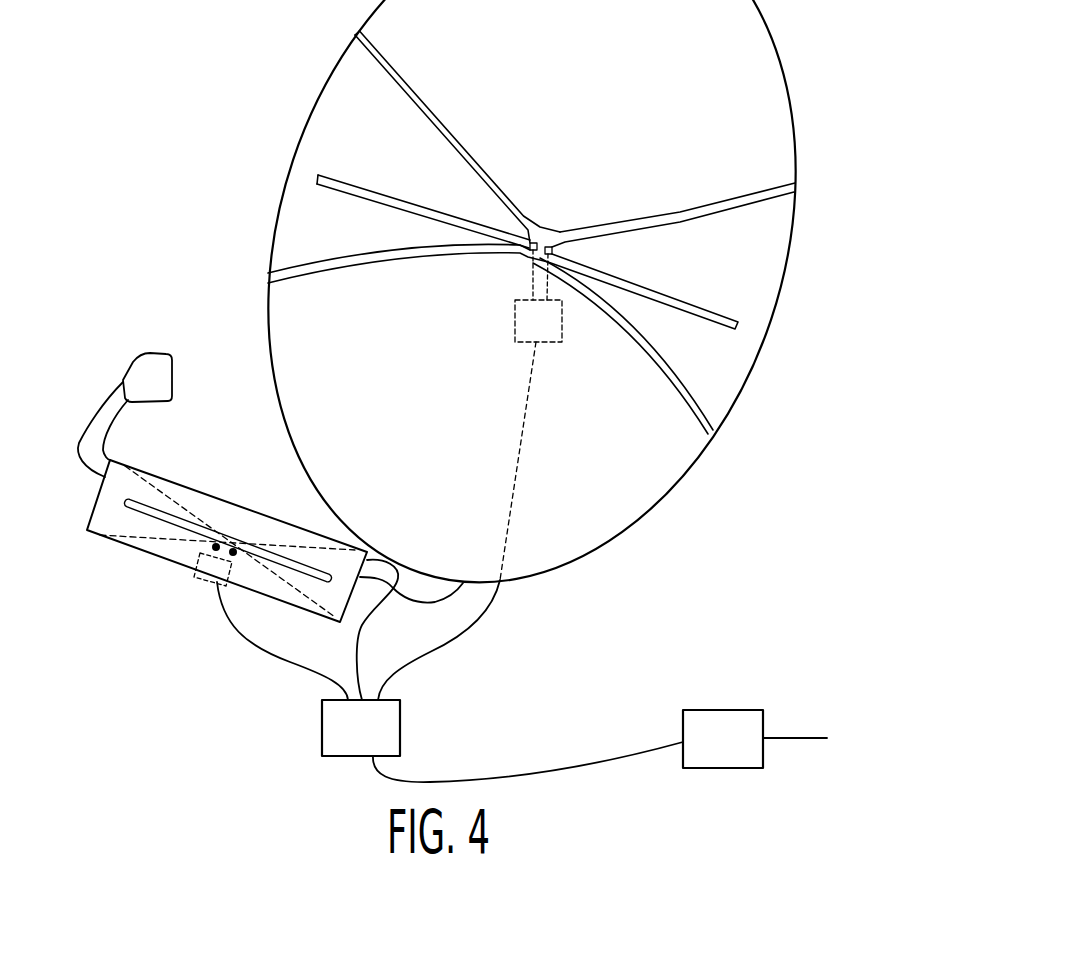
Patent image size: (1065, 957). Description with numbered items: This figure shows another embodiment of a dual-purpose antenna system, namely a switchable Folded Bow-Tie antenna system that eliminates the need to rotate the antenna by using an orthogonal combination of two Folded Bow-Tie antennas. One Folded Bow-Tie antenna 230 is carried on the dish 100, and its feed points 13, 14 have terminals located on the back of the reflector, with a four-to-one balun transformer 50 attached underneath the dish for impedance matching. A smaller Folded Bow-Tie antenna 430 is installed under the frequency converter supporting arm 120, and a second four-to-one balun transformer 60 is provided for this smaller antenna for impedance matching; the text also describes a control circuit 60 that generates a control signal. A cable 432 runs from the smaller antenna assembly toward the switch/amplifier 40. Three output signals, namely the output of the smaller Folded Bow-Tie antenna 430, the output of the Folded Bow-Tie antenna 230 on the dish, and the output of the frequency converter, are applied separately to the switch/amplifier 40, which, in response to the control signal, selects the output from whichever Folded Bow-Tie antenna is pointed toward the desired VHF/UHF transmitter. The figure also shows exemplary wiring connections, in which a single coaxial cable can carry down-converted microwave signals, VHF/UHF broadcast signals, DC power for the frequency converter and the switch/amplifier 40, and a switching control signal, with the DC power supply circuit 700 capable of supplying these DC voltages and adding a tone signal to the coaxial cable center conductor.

The dish reflector 100 is at (653, 598).
The Folded Bow-Tie antenna 230 is at (722, 378).
The feed point 13 is at (533, 242).
The feed point 14 is at (552, 246).
The balun transformer 50 is at (583, 378).
The frequency converter supporting arm 120 is at (78, 405).
The smaller Folded Bow-Tie antenna 430 is at (178, 545).
The balun transformer 60 is at (208, 570).
The cable 432 is at (291, 668).
The switch/amplifier 40 is at (442, 742).
The DC power supply circuit 700 is at (742, 800).